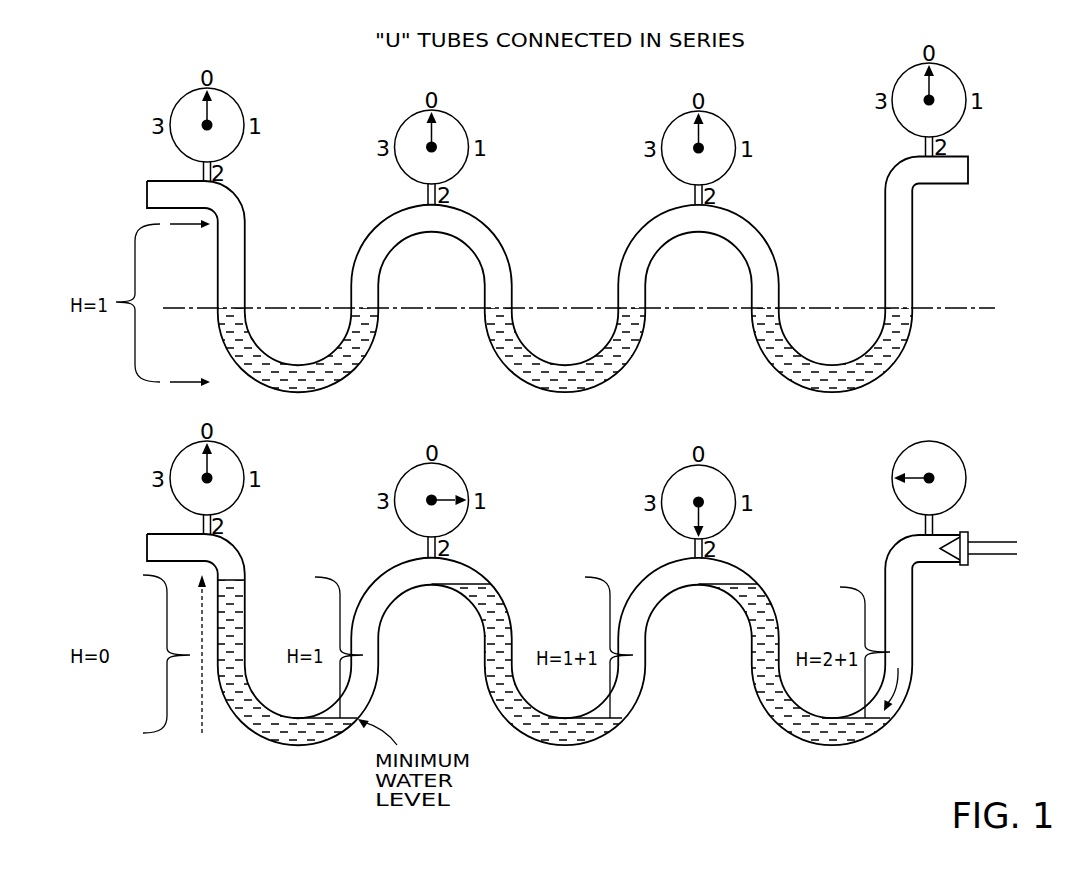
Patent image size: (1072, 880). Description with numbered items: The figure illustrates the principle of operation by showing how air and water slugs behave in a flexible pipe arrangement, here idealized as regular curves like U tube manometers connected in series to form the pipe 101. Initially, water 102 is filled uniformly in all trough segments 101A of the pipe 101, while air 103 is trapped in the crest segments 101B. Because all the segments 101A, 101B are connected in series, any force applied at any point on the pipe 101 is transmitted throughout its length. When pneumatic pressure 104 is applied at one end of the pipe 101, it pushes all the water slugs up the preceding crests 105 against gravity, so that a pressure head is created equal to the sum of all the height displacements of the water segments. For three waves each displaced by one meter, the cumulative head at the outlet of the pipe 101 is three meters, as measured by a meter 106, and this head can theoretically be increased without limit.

The pipe 101 is at (566, 451).
The trough segments 101A is at (373, 345).
The crest segments 101B is at (481, 224).
The water 102 is at (806, 371).
The air 103 is at (750, 239).
The pneumatic pressure 104 is at (997, 553).
The preceding crests 105 is at (283, 742).
The meter 106 is at (901, 462).